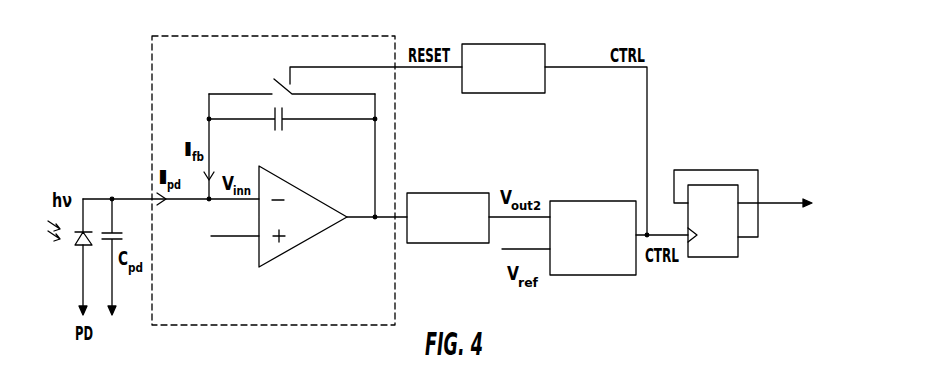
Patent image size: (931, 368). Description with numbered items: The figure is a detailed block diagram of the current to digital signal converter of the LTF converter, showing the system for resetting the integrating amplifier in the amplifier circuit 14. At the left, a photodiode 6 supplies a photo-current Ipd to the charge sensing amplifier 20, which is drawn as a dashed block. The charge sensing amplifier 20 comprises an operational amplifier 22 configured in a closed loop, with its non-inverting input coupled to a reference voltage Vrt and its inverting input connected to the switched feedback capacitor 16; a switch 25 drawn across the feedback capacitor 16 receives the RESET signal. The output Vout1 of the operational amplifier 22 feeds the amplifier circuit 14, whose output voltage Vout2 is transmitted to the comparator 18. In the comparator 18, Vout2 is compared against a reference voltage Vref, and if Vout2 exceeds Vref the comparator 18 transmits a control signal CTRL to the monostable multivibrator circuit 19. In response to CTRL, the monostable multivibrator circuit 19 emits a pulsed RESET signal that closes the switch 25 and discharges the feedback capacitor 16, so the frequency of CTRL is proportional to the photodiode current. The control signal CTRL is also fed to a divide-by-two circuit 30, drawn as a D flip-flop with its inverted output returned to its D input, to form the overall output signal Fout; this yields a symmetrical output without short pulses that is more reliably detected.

The photodiode 6 is at (97, 207).
The charge sensing amplifier 20 is at (273, 169).
The reset switch 25 is at (335, 80).
The switched feedback capacitor 16 is at (292, 129).
The operational amplifier 22 is at (309, 219).
The amplifier circuit 14 is at (448, 205).
The monostable multivibrator circuit 19 is at (503, 55).
The comparator 18 is at (593, 223).
The divide-by-two circuit 30 is at (743, 227).